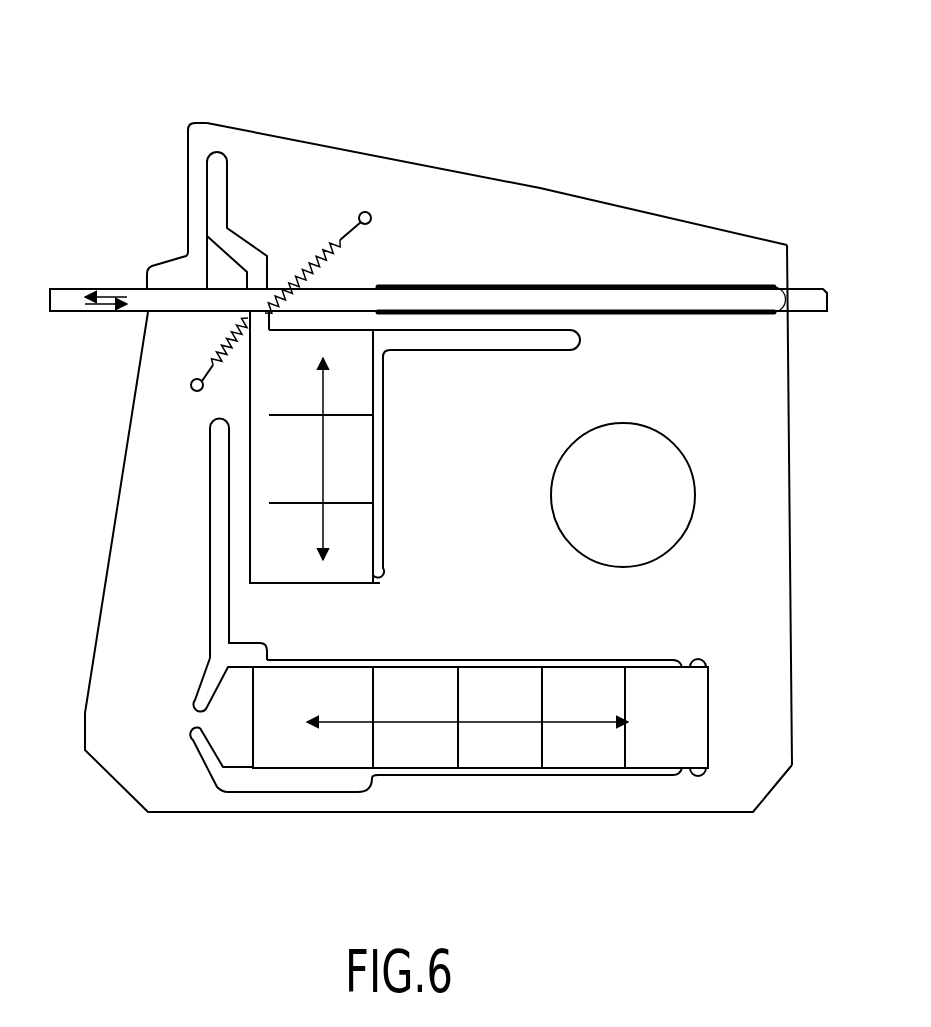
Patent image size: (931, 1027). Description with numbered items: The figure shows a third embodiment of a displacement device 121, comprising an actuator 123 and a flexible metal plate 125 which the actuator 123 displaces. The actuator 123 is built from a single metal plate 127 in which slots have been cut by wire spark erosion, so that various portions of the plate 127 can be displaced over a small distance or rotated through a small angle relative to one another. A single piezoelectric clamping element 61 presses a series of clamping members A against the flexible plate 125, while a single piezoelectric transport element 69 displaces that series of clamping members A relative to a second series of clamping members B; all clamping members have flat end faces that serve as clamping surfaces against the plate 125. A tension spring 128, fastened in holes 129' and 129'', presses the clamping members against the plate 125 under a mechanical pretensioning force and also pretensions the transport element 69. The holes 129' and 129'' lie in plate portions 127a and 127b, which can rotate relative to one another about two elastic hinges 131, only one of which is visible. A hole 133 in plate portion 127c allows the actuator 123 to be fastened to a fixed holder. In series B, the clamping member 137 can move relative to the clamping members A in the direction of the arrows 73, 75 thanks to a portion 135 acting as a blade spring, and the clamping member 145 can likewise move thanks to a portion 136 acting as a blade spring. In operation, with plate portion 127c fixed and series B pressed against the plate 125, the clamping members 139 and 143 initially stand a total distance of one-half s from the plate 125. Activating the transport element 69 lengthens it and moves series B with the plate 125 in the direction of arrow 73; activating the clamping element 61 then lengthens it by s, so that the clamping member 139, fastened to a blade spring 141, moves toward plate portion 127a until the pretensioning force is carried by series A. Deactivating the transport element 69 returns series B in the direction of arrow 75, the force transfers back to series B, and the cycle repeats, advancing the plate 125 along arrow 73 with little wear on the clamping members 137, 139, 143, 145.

The displacement device 121 is at (95, 97).
The actuator 123 is at (614, 177).
The flexible metal plate 125 is at (60, 297).
The metal plate 127 is at (771, 810).
The plate portion 127a is at (648, 240).
The plate portion 127b is at (125, 547).
The plate portion 127c is at (747, 608).
The tension spring 128 is at (312, 262).
The hole 129' is at (382, 216).
The hole 129'' is at (182, 398).
The elastic hinge 131 is at (785, 297).
The hole 133 is at (640, 423).
The portion acting as a blade spring 135 is at (193, 178).
The portion acting as a blade spring 136 is at (237, 474).
The clamping member 137 is at (173, 277).
The clamping member 139 is at (370, 322).
The blade spring 141 is at (508, 323).
The clamping member 143 is at (358, 287).
The clamping member 145 is at (177, 323).
The piezoelectric clamping element 61 is at (347, 415).
The piezoelectric transport element 69 is at (485, 750).
The arrow 73 is at (107, 298).
The arrow 75 is at (101, 308).